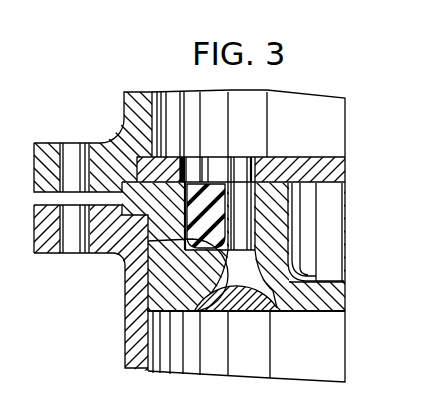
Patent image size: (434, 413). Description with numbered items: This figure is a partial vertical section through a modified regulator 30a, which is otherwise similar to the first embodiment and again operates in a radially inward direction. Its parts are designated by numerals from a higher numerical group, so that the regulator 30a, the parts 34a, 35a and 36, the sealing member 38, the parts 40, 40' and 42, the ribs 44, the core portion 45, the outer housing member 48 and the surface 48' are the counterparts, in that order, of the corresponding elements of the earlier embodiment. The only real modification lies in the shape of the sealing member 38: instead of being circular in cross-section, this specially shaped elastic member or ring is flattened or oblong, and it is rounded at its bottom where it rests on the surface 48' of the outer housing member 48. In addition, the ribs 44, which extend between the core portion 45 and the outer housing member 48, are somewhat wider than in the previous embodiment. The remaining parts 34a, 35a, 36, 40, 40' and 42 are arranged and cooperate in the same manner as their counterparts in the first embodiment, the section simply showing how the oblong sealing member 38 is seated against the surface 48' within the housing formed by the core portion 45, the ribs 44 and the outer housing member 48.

The regulator 30a is at (56, 264).
The regulator part 34a is at (105, 148).
The regulator part 35a is at (142, 283).
The regulator part 36 is at (346, 246).
The sealing member 38 is at (204, 193).
The regulator part 40 is at (217, 206).
The regulator part 40' is at (251, 176).
The regulator part 42 is at (238, 217).
The ribs 44 is at (240, 278).
The core portion 45 is at (322, 300).
The outer housing member 48 is at (155, 289).
The surface 48' is at (98, 267).